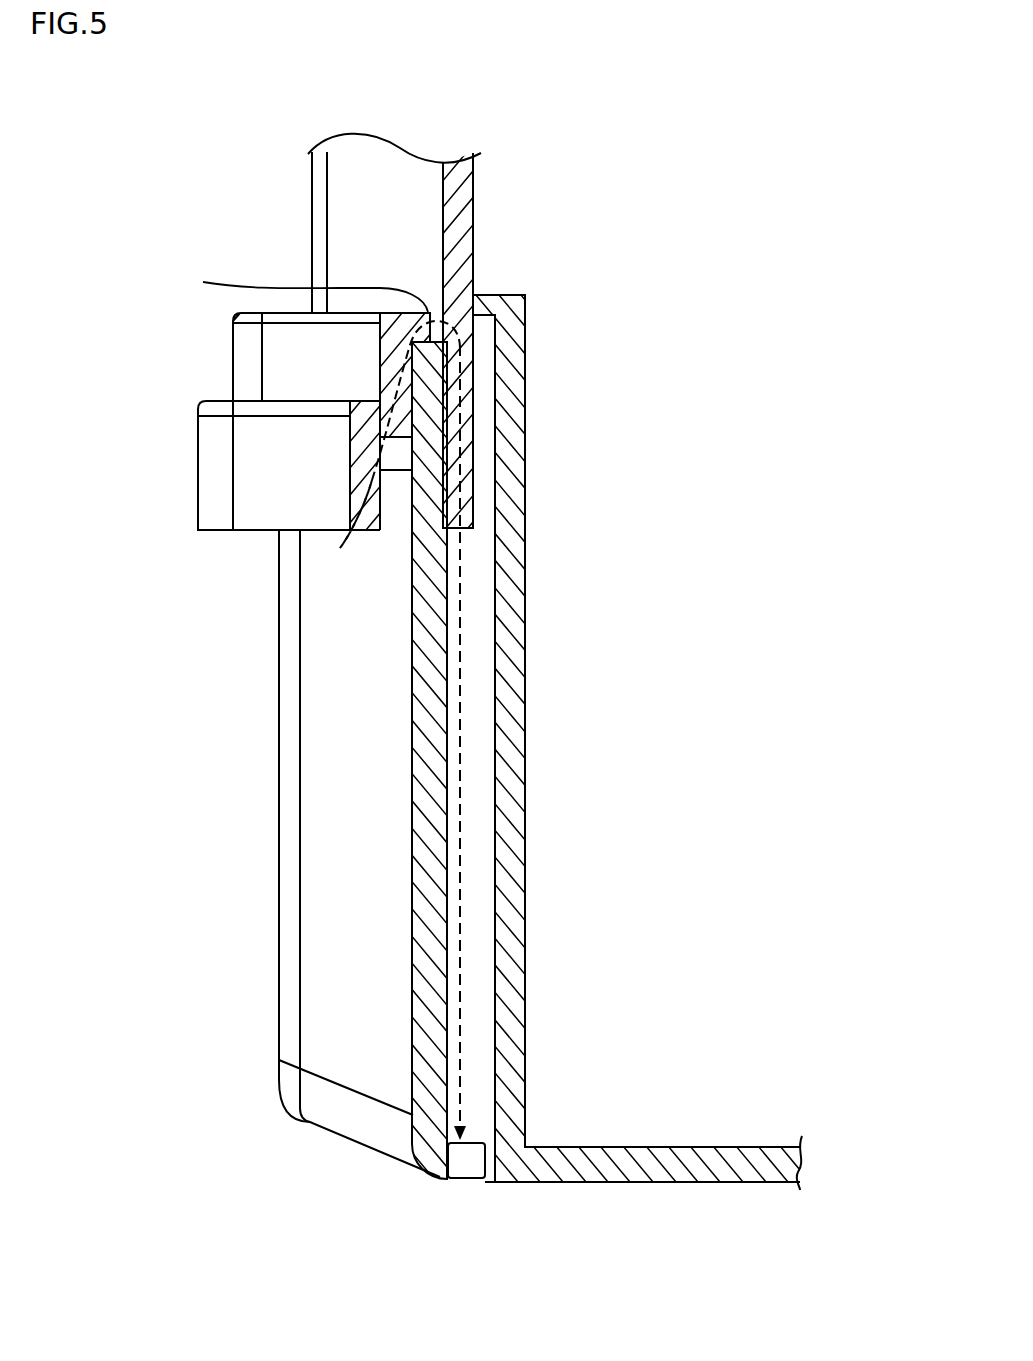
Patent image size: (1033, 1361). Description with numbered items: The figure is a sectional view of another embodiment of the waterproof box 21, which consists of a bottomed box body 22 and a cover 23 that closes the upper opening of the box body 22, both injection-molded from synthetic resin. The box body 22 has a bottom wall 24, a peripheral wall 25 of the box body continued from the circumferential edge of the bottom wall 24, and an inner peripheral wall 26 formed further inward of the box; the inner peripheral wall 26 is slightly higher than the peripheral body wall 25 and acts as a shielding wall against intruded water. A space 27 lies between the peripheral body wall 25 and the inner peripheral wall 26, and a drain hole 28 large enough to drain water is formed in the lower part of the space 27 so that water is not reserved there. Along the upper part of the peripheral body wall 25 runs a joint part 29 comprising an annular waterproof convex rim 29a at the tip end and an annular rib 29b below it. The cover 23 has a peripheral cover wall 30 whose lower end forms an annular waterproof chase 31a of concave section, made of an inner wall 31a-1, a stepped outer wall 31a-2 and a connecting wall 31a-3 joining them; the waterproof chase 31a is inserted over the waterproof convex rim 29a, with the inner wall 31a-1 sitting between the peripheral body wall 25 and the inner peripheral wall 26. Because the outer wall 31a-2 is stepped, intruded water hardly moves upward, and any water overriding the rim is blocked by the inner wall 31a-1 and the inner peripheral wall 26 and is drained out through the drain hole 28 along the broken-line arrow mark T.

The waterproof box 21 is at (181, 204).
The box body 22 is at (277, 802).
The cover 23 is at (311, 238).
The bottom wall 24 is at (692, 1147).
The peripheral wall of the box body 25 is at (413, 910).
The inner peripheral wall 26 is at (512, 905).
The space 27 is at (483, 977).
The drain hole 28 is at (467, 1167).
The joint part 29 is at (420, 418).
The waterproof convex rim 29a is at (436, 362).
The rib 29b is at (390, 460).
The peripheral cover wall 30 is at (458, 189).
The waterproof chase 31a is at (457, 367).
The inner wall 31a-1 is at (472, 482).
The outer wall 31a-2 is at (372, 516).
The connecting wall 31a-3 is at (280, 335).
The arrow mark T is at (465, 702).